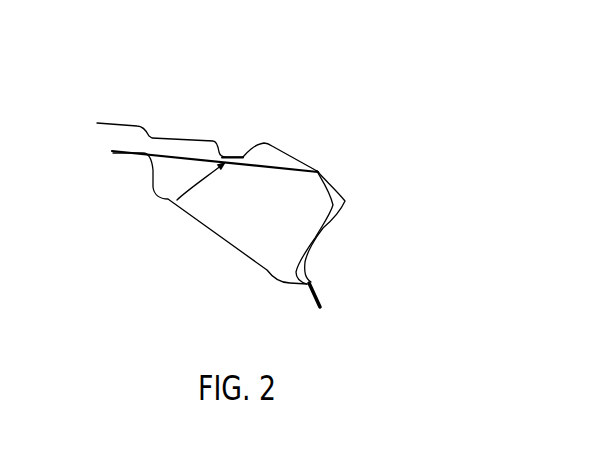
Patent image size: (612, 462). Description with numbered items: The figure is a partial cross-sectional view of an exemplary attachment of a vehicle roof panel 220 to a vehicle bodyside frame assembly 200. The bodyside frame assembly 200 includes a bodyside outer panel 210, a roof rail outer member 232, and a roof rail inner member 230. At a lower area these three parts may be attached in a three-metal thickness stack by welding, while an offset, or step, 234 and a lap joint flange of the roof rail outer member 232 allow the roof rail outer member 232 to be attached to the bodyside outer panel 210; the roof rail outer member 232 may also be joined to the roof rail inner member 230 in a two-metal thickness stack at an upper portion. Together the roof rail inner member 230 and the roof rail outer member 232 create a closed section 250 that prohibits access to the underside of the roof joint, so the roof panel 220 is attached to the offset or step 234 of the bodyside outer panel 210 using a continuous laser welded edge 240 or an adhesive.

The vehicle bodyside frame assembly 200 is at (392, 79).
The bodyside outer panel 210 is at (346, 201).
The vehicle roof panel 220 is at (168, 138).
The roof rail inner member 230 is at (240, 242).
The roof rail outer member 232 is at (318, 172).
The offset or step 234 is at (232, 144).
The continuous laser welded edge 240 is at (243, 157).
The closed section 250 is at (177, 200).